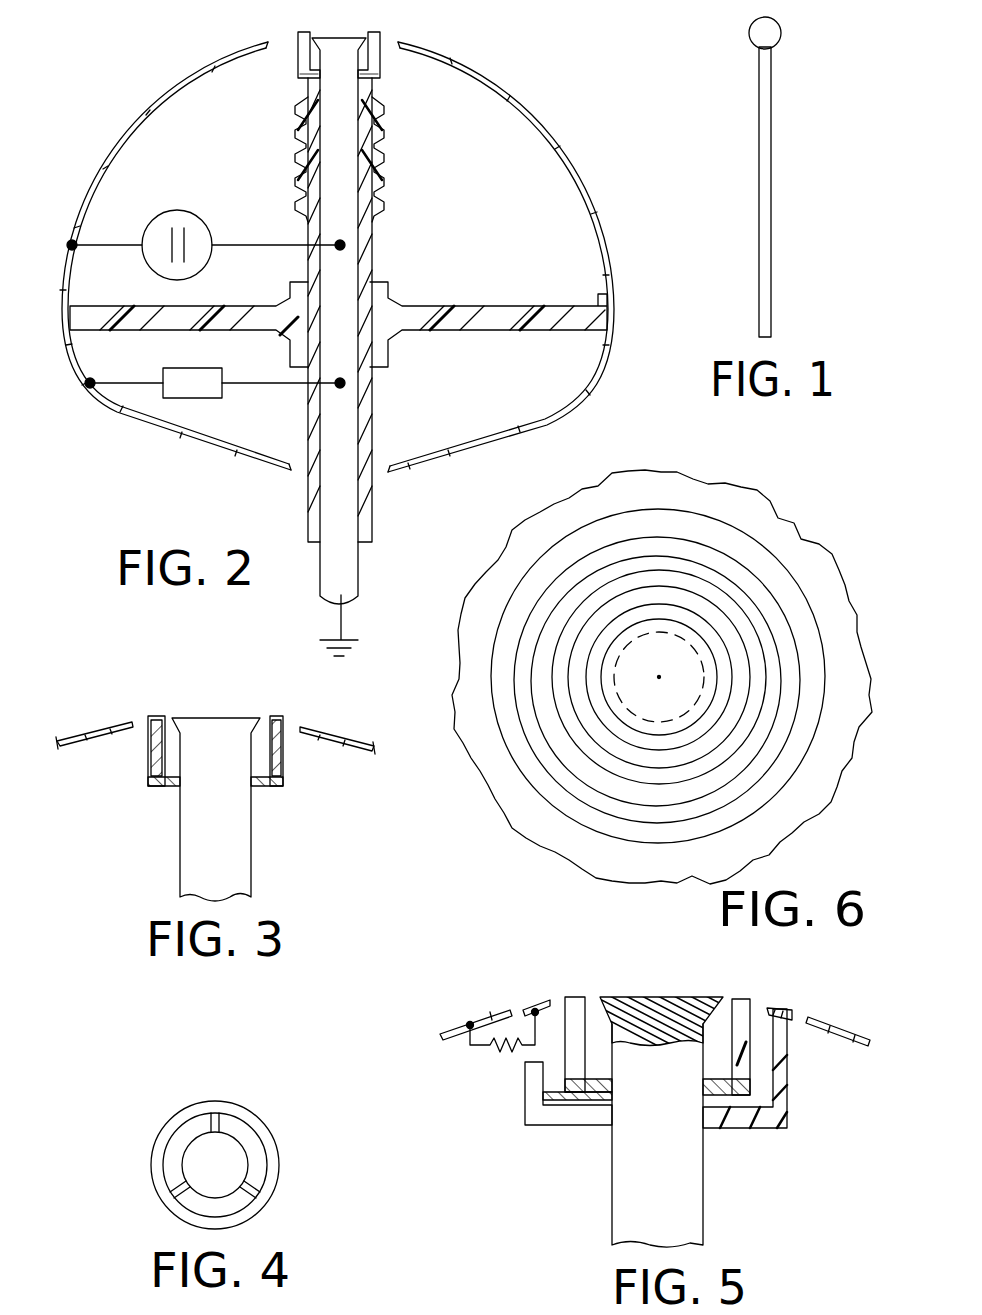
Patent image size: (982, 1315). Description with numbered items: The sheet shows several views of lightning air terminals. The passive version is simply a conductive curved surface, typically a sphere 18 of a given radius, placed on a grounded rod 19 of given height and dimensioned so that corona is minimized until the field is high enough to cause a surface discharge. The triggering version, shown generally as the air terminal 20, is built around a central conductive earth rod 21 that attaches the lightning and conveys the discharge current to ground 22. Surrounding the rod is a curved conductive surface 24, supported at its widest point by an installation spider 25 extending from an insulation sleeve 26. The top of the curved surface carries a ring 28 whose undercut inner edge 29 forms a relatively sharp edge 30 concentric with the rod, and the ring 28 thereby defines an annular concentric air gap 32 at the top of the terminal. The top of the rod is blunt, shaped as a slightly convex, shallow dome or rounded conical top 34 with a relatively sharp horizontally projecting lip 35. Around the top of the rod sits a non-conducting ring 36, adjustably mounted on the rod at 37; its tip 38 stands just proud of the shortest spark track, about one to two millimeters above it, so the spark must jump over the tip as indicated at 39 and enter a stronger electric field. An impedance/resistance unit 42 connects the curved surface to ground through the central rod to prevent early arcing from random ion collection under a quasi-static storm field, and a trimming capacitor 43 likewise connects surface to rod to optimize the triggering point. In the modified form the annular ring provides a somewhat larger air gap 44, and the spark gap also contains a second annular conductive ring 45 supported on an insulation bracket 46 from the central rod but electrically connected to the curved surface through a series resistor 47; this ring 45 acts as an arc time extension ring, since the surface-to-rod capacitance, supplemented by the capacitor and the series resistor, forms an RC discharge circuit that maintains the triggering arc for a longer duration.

In FIG. 1, the sphere 18 is at (781, 34).
In FIG. 1, the grounded rod 19 is at (771, 160).
In FIG. 2, the air terminal 20 is at (578, 57).
In FIG. 2, the central conductive earth rod 21 is at (345, 440).
In FIG. 3, the central conductive earth rod 21 is at (235, 858).
In FIG. 4, the central conductive earth rod 21 is at (215, 1165).
In FIG. 5, the central conductive earth rod 21 is at (680, 1190).
In FIG. 2, the ground 22 is at (365, 634).
In FIG. 2, the curved conductive surface 24 is at (612, 192).
In FIG. 6, the curved conductive surface 24 is at (822, 778).
In FIG. 3, the curved conductive surface 24 is at (88, 730).
In FIG. 5, the curved conductive surface 24 is at (447, 1030).
In FIG. 2, the installation spider 25 is at (515, 320).
In FIG. 2, the insulation sleeve 26 is at (362, 246).
In FIG. 2, the ring 28 is at (405, 48).
In FIG. 6, the ring 28 is at (818, 652).
In FIG. 3, the ring 28 is at (320, 728).
In FIG. 5, the ring 28 is at (501, 1010).
In FIG. 3, the undercut inner edge 29 is at (135, 722).
In FIG. 3, the sharp edge 30 is at (310, 728).
In FIG. 2, the air gap 32 is at (285, 30).
In FIG. 3, the air gap 32 is at (276, 700).
In FIG. 6, the rounded conical top 34 is at (664, 653).
In FIG. 3, the rounded conical top 34 is at (222, 717).
In FIG. 5, the rounded conical top 34 is at (640, 996).
In FIG. 6, the lip 35 is at (690, 627).
In FIG. 3, the lip 35 is at (262, 718).
In FIG. 5, the lip 35 is at (720, 997).
In FIG. 2, the non-conducting ring 36 is at (380, 62).
In FIG. 3, the non-conducting ring 36 is at (285, 765).
In FIG. 3, the adjustable mounting 37 is at (262, 788).
In FIG. 4, the adjustable mounting 37 is at (222, 1125).
In FIG. 5, the adjustable mounting 37 is at (590, 1094).
In FIG. 2, the ring tip 38 is at (378, 32).
In FIG. 6, the ring tip 38 is at (718, 623).
In FIG. 3, the ring tip 38 is at (156, 718).
In FIG. 4, the ring tip 38 is at (266, 1133).
In FIG. 5, the ring tip 38 is at (757, 967).
In FIG. 3, the spark jump 39 is at (175, 704).
In FIG. 2, the impedance/resistance unit 42 is at (185, 400).
In FIG. 2, the trimming capacitor 43 is at (196, 226).
In FIG. 5, the air gap 44 is at (556, 972).
In FIG. 6, the second annular conductive ring 45 is at (758, 612).
In FIG. 5, the second annular conductive ring 45 is at (537, 1005).
In FIG. 5, the insulation bracket 46 is at (788, 1098).
In FIG. 5, the series resistor 47 is at (497, 1050).